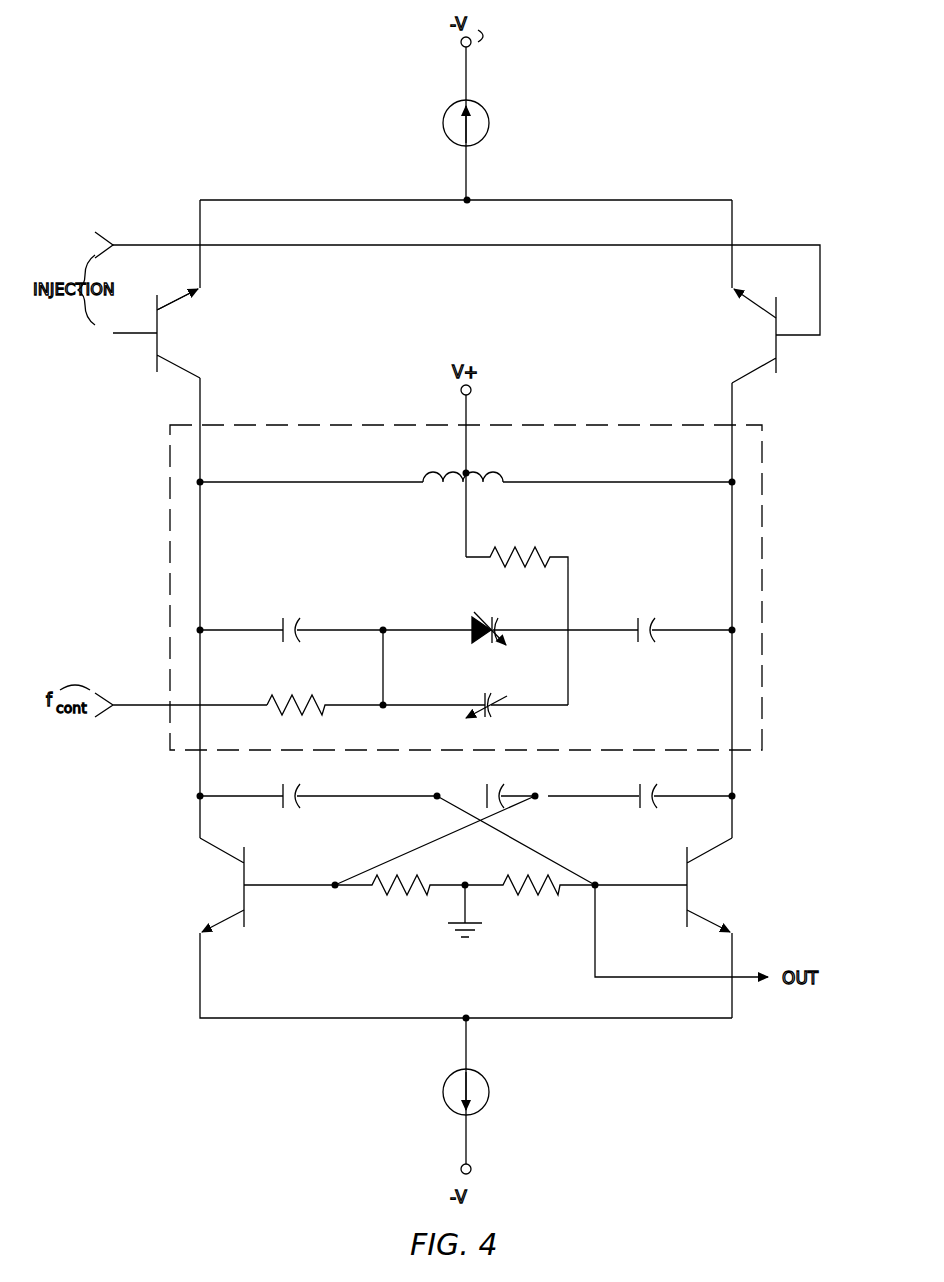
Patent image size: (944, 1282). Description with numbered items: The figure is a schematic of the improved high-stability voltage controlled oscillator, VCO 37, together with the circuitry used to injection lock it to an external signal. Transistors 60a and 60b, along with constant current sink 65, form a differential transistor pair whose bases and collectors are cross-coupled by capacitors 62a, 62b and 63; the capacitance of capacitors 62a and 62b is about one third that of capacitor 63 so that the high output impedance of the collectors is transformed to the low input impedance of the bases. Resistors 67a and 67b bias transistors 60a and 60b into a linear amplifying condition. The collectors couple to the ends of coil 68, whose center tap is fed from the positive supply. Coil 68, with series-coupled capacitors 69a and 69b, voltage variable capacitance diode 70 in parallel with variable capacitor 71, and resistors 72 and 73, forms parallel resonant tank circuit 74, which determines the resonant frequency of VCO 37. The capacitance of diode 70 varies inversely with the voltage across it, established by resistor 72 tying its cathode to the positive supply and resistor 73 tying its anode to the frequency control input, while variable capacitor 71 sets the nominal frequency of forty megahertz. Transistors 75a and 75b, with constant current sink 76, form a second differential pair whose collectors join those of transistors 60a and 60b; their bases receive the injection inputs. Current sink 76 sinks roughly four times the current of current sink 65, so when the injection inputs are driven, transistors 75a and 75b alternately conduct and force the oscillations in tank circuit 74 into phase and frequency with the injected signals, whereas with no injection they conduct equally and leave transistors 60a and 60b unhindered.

The VCO 37 is at (654, 155).
The transistor 60a is at (248, 928).
The transistor 60b is at (688, 928).
The capacitor 62a is at (297, 810).
The capacitor 62b is at (649, 810).
The capacitor 63 is at (499, 790).
The constant current sink 65 is at (484, 1078).
The resistor 67a is at (410, 893).
The resistor 67b is at (537, 893).
The coil 68 is at (503, 478).
The capacitor 69a is at (297, 622).
The capacitor 69b is at (650, 622).
The voltage variable capacitance diode 70 is at (492, 612).
The variable capacitor 71 is at (485, 690).
The resistor 72 is at (535, 545).
The resistor 73 is at (312, 700).
The parallel resonant tank circuit 74 is at (170, 753).
The transistor 75a is at (157, 375).
The transistor 75b is at (776, 376).
The constant current sink 76 is at (488, 108).